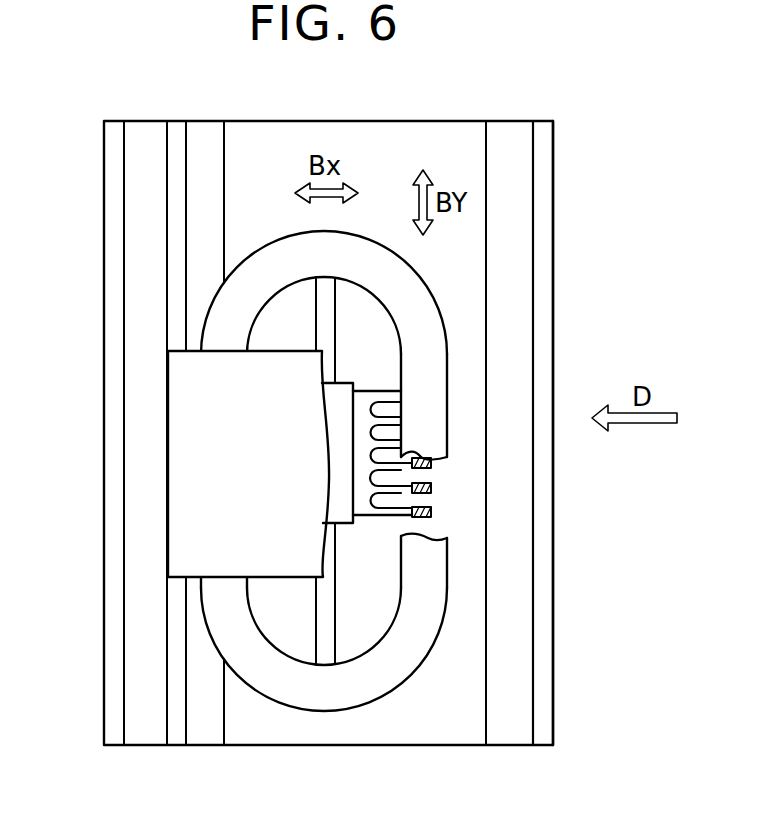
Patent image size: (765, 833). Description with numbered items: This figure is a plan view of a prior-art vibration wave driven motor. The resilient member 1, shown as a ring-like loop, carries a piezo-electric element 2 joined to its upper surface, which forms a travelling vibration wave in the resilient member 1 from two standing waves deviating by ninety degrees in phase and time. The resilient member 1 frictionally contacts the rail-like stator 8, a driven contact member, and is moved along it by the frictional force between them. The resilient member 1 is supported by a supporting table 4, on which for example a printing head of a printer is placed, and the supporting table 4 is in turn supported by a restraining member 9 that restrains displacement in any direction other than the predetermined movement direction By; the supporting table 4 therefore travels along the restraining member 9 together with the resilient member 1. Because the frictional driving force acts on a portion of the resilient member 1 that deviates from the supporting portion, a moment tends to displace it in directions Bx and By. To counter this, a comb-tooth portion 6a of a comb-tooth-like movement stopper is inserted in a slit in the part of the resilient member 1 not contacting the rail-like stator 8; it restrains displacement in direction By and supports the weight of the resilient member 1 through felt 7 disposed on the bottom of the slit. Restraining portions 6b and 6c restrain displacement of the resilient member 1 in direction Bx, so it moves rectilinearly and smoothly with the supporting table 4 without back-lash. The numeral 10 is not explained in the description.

The resilient member 1 is at (447, 333).
The piezo-electric element 2 is at (428, 377).
The supporting table 4 is at (193, 392).
The comb-tooth portion 6a is at (400, 518).
The restraining portion 6b is at (328, 632).
The restraining portion 6c is at (322, 300).
The felt 7 is at (433, 488).
The rail-like stator 8 is at (210, 715).
The restraining member 9 is at (513, 610).
The outer wall 10 is at (543, 665).